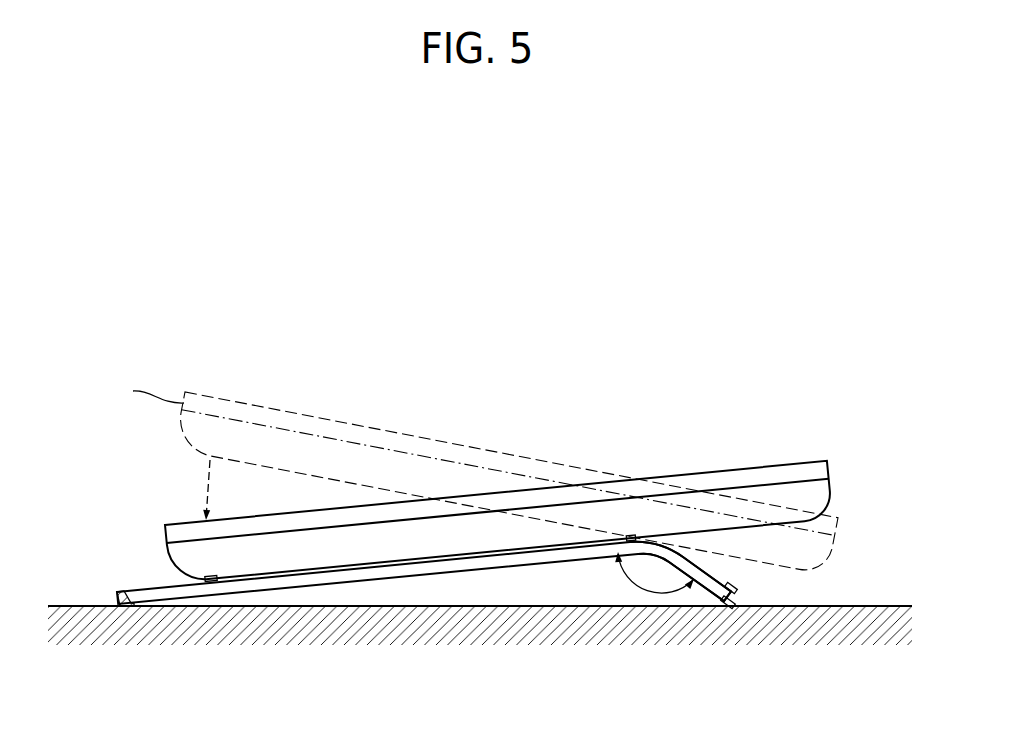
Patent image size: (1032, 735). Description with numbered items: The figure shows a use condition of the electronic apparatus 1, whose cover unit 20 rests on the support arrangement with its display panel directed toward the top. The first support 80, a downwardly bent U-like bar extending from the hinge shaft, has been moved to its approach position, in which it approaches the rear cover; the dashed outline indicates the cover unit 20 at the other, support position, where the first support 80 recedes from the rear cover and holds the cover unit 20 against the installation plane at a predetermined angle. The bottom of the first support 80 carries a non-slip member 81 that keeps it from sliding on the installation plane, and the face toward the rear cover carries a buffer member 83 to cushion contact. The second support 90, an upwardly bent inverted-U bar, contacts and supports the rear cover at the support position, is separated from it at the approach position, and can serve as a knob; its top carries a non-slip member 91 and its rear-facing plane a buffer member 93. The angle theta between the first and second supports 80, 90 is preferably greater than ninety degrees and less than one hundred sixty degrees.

The electronic apparatus 1 is at (620, 338).
The cover unit 20 is at (837, 455).
The first support 80 is at (324, 578).
The non-slip member 81 is at (128, 607).
The buffer member 83 is at (217, 583).
The second support 90 is at (707, 589).
The non-slip member 91 is at (731, 607).
The buffer member 93 is at (741, 593).